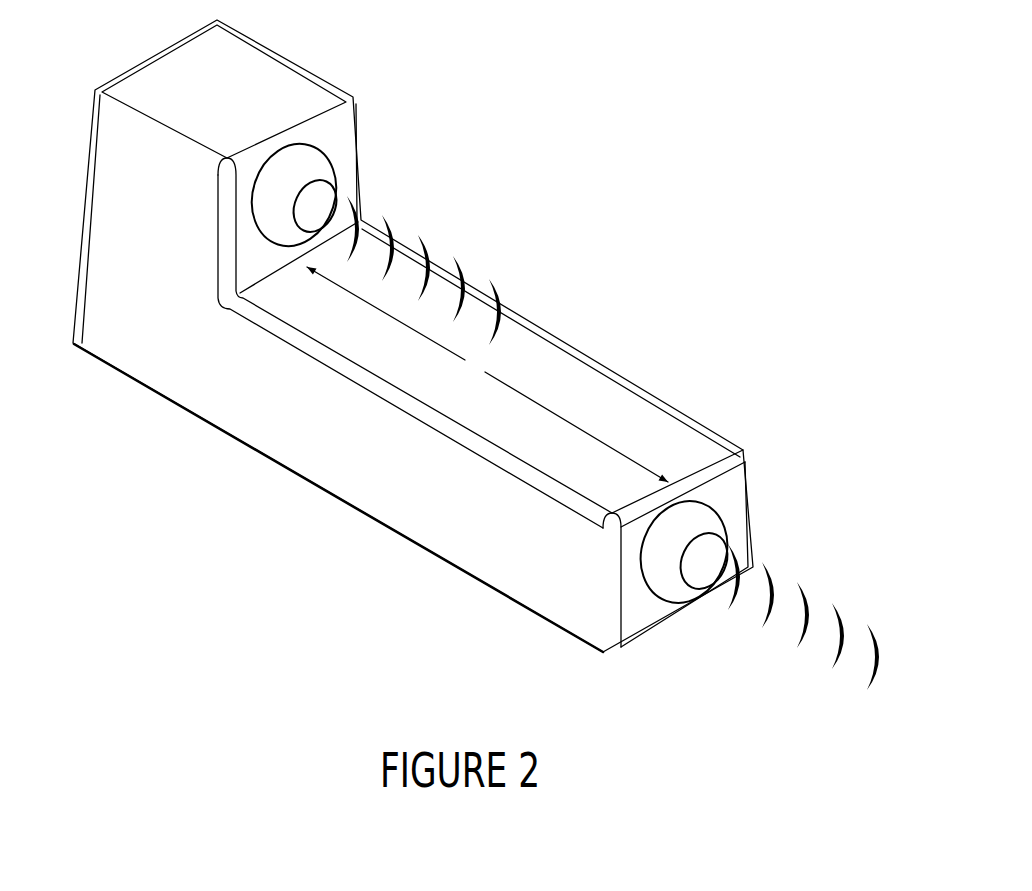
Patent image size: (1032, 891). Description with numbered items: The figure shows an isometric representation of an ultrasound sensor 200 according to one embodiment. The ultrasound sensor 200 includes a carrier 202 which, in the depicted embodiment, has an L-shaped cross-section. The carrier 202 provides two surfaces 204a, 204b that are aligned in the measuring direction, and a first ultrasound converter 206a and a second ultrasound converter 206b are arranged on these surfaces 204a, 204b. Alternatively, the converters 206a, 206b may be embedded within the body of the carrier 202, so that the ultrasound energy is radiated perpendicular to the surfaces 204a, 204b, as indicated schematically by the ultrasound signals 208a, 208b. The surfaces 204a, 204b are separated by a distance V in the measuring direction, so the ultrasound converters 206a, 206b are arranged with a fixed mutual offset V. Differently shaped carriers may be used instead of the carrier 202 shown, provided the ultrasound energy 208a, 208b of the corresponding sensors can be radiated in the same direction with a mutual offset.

The ultrasound sensor 200 is at (486, 355).
The carrier 202 is at (395, 498).
The first surface 204a is at (347, 167).
The second surface 204b is at (733, 513).
The first ultrasound converter 206a is at (320, 173).
The second ultrasound converter 206b is at (710, 530).
The first ultrasound signal 208a is at (498, 279).
The second ultrasound signal 208b is at (877, 640).